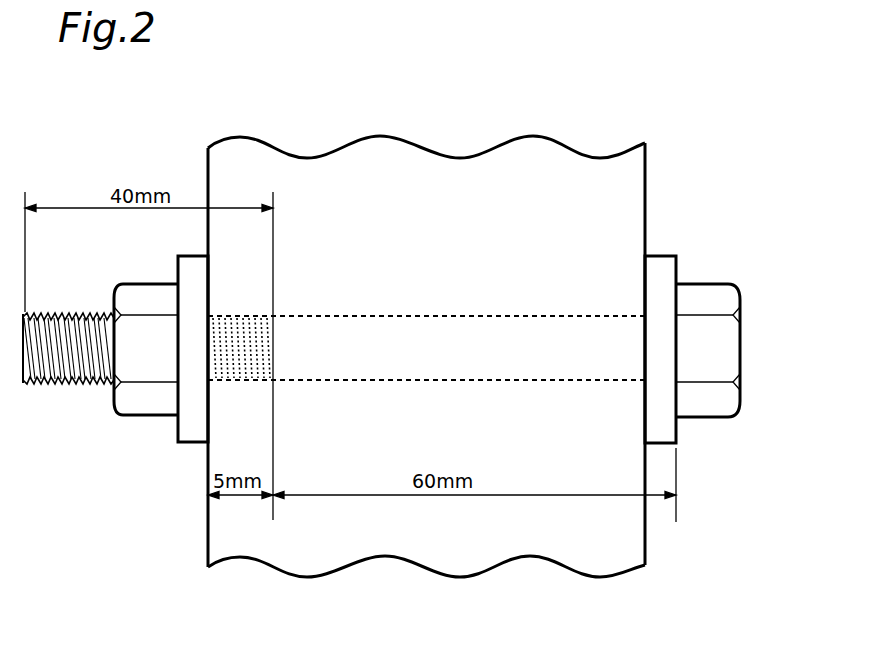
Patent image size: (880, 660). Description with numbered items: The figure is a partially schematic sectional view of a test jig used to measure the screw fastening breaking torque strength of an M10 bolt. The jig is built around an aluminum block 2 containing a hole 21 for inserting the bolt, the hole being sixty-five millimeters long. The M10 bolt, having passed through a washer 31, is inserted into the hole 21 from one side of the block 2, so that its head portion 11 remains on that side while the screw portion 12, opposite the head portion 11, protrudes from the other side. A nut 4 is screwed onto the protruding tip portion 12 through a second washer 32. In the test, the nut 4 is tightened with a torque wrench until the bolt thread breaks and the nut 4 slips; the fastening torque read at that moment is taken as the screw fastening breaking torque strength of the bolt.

The aluminum block 2 is at (366, 211).
The nut 4 is at (147, 416).
The head portion 11 is at (697, 283).
The screw portion 12 is at (58, 316).
The hole for inserting a bolt 21 is at (463, 317).
The washer 31 is at (658, 445).
The washer 32 is at (197, 444).